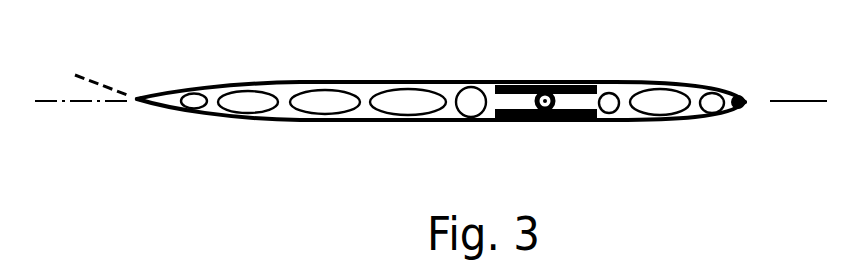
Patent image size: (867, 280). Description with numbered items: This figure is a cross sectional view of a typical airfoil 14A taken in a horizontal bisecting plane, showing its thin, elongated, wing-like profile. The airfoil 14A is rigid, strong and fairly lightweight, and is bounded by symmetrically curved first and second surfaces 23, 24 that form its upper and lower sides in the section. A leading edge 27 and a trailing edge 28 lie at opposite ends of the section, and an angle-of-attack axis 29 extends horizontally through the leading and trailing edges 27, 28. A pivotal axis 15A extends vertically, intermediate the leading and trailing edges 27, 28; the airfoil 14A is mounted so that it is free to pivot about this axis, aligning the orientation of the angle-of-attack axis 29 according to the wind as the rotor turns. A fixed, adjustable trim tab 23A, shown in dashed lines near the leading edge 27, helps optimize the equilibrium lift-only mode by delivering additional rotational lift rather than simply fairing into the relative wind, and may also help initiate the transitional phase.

The airfoil 14A is at (592, 82).
The pivotal axis 15A is at (542, 85).
The first surface 23 is at (392, 83).
The trim tab 23A is at (95, 82).
The second surface 24 is at (388, 121).
The leading edge 27 is at (746, 101).
The trailing edge 28 is at (132, 103).
The angle-of-attack axis 29 is at (50, 103).